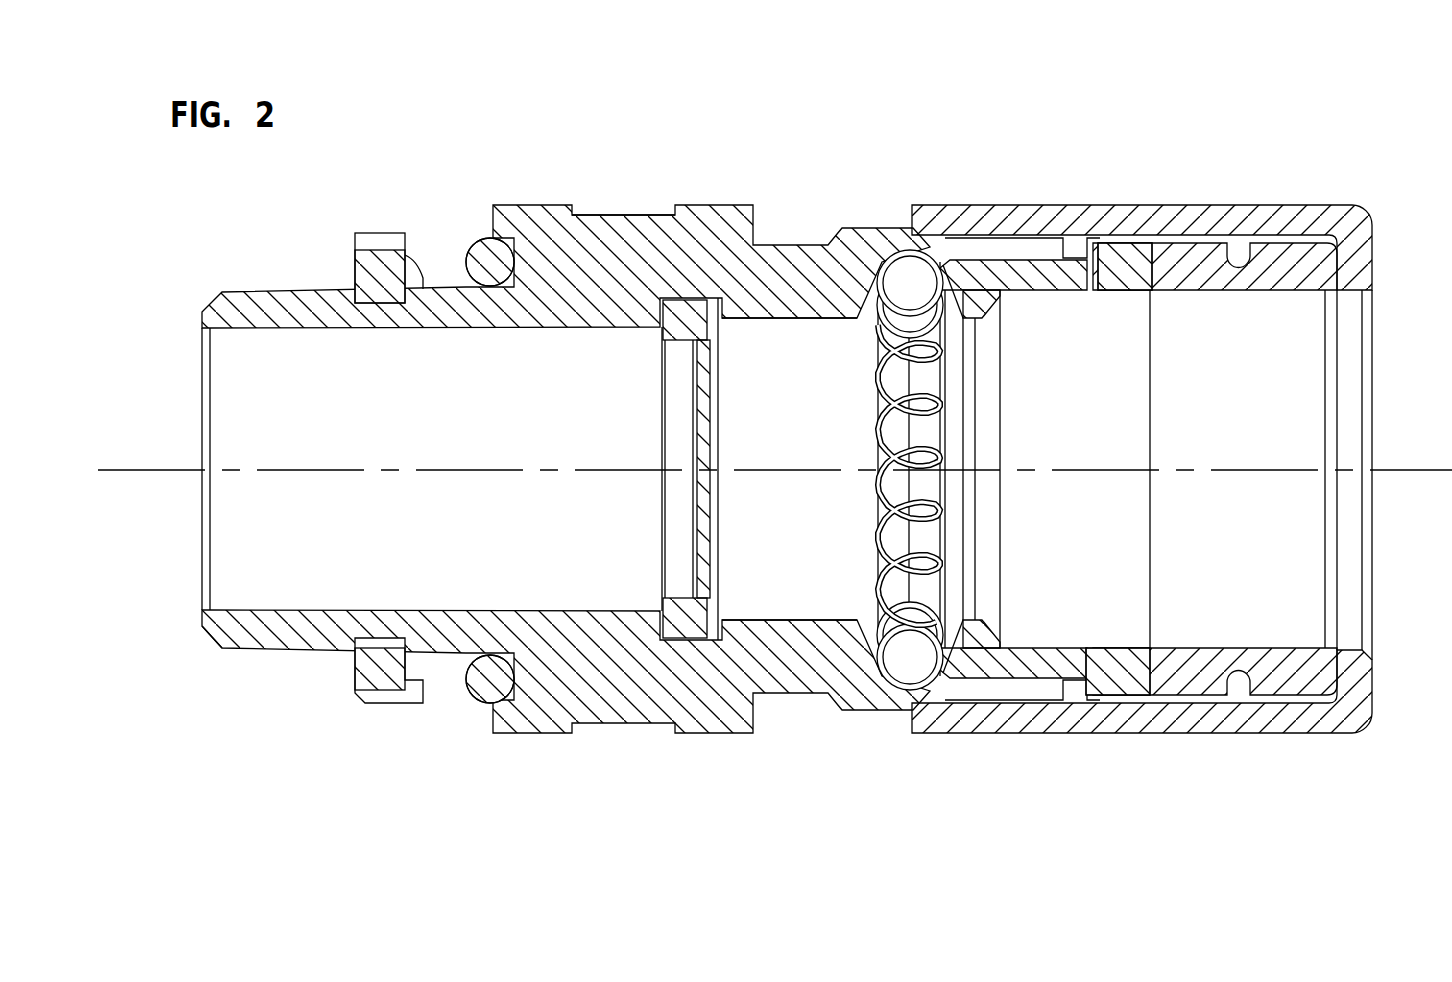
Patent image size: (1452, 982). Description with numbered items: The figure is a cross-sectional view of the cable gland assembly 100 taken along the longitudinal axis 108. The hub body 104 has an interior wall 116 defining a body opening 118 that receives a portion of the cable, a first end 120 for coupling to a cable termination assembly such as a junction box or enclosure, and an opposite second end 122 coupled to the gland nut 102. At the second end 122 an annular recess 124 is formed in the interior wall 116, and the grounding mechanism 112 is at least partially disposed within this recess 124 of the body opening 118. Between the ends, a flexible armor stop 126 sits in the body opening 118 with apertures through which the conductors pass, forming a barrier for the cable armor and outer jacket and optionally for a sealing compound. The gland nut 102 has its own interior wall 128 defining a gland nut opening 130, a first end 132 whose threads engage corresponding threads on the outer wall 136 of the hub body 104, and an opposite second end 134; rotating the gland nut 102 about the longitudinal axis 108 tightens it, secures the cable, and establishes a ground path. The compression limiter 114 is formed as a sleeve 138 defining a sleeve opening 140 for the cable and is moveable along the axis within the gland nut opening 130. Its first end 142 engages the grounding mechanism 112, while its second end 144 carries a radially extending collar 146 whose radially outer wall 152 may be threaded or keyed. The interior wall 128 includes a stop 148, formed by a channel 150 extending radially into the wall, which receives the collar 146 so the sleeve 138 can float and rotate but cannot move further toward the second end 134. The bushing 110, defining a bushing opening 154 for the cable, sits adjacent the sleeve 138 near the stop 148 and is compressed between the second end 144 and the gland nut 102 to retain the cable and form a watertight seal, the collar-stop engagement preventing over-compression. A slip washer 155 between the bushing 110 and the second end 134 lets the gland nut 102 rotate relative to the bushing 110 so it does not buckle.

The cable gland assembly 100 is at (1352, 137).
The gland nut 102 is at (1372, 252).
The hub body 104 is at (535, 213).
The longitudinal axis 108 is at (145, 470).
The bushing 110 is at (1283, 262).
The grounding mechanism 112 is at (887, 255).
The compression limiter 114 is at (1000, 258).
The interior wall 116 is at (785, 318).
The body opening 118 is at (255, 410).
The first end 120 is at (237, 652).
The second end 122 is at (898, 712).
The annular recess 124 is at (865, 592).
The armor stop 126 is at (683, 637).
The interior wall 128 is at (1050, 247).
The gland nut opening 130 is at (1042, 688).
The first end 132 is at (917, 735).
The second end 134 is at (1364, 731).
The outer wall 136 is at (625, 215).
The sleeve 138 is at (1065, 258).
The sleeve opening 140 is at (1125, 390).
The first end 142 is at (947, 258).
The second end 144 is at (1135, 245).
The collar 146 is at (1123, 692).
The stop 148 is at (1233, 705).
The channel 150 is at (1175, 708).
The radially outer wall 152 is at (1103, 712).
The bushing opening 154 is at (1305, 420).
The slip washer 155 is at (1333, 663).